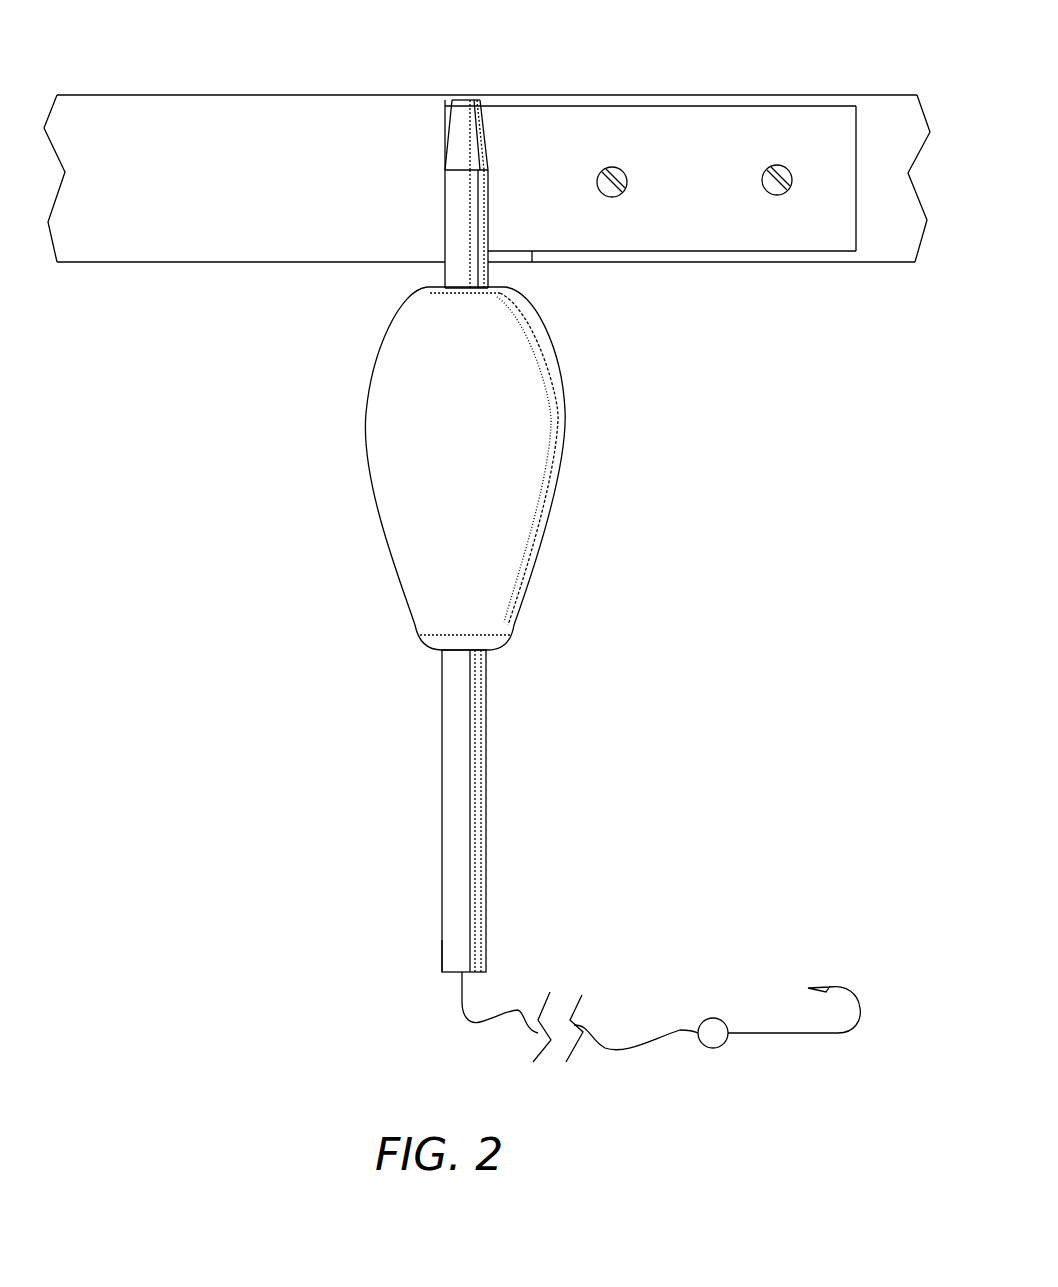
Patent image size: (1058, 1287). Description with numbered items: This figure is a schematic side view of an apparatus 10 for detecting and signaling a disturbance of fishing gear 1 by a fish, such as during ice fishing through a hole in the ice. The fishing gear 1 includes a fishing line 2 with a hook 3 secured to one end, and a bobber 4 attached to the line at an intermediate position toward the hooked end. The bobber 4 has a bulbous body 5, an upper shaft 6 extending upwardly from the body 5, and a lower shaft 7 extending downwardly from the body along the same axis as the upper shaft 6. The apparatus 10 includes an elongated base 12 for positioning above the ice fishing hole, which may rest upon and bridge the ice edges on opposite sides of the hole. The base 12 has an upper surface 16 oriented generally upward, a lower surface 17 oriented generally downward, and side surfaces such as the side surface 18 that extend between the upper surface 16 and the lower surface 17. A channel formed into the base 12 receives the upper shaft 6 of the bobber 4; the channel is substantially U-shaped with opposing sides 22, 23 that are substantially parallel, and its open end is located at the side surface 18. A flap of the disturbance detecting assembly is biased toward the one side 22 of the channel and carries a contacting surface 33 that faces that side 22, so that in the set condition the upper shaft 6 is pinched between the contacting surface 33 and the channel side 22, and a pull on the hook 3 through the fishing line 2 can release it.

The fishing gear 1 is at (405, 857).
The fishing line 2 is at (648, 1043).
The hook 3 is at (783, 1035).
The bobber 4 is at (455, 617).
The bulbous body 5 is at (432, 495).
The upper shaft 6 is at (445, 270).
The lower shaft 7 is at (455, 758).
The apparatus 10 is at (650, 150).
The base 12 is at (878, 197).
The upper surface 16 is at (268, 95).
The lower surface 17 is at (196, 262).
The side surface 18 is at (120, 165).
The channel side 22 is at (447, 107).
The channel side 23 is at (535, 104).
The contacting surface 33 is at (492, 188).